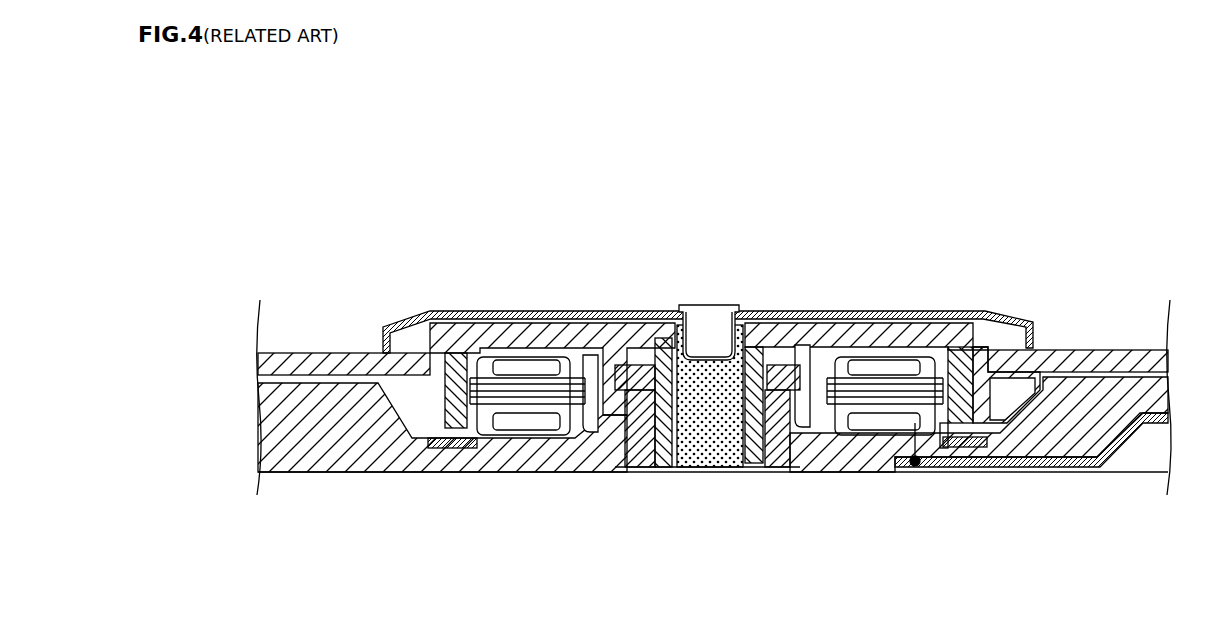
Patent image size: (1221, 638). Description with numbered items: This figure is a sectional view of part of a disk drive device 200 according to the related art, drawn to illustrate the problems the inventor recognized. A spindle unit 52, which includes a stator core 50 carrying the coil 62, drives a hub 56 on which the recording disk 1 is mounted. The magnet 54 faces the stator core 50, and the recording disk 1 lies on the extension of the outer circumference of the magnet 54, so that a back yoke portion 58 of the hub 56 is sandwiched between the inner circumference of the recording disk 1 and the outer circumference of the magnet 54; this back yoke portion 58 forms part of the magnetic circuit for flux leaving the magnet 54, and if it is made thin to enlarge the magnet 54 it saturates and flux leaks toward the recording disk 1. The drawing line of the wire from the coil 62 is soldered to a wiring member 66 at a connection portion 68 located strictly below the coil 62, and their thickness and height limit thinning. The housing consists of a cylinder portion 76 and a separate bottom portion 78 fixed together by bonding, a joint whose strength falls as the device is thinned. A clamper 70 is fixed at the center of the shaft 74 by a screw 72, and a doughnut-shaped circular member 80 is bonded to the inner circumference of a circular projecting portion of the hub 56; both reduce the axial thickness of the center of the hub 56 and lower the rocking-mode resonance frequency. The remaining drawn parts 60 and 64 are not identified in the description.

The recording disk 1 is at (312, 352).
The stator core 50 is at (485, 472).
The spindle unit 52 is at (485, 348).
The magnet 54 is at (937, 311).
The hub 56 is at (600, 311).
The back yoke portion 58 is at (985, 311).
The base 60 is at (830, 472).
The coil 62 is at (880, 348).
The cover plate 64 is at (760, 320).
The wiring member 66 is at (988, 468).
The connection portion 68 is at (921, 468).
The clamper 70 is at (419, 311).
The screw 72 is at (705, 305).
The shaft 74 is at (686, 474).
The cylinder portion 76 is at (635, 474).
The bottom portion 78 is at (738, 474).
The circular member 80 is at (787, 318).
The disk drive device 200 is at (688, 616).